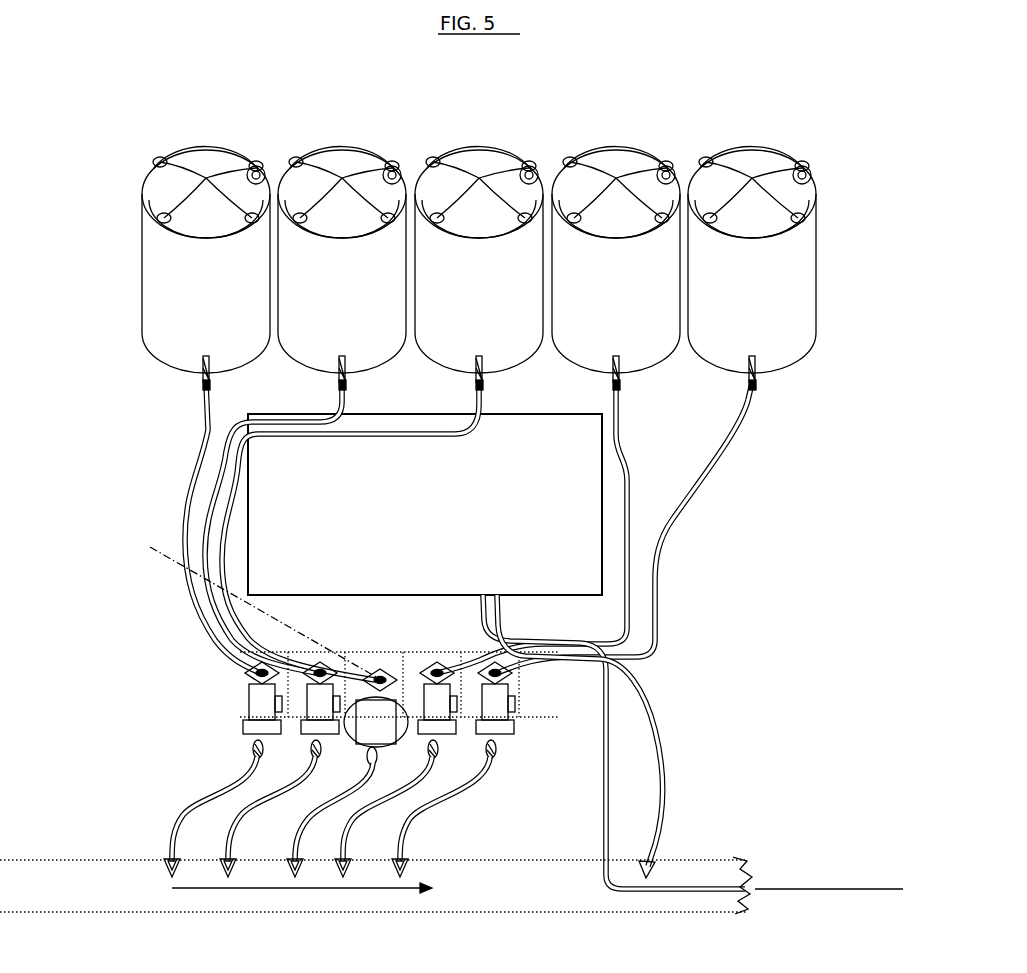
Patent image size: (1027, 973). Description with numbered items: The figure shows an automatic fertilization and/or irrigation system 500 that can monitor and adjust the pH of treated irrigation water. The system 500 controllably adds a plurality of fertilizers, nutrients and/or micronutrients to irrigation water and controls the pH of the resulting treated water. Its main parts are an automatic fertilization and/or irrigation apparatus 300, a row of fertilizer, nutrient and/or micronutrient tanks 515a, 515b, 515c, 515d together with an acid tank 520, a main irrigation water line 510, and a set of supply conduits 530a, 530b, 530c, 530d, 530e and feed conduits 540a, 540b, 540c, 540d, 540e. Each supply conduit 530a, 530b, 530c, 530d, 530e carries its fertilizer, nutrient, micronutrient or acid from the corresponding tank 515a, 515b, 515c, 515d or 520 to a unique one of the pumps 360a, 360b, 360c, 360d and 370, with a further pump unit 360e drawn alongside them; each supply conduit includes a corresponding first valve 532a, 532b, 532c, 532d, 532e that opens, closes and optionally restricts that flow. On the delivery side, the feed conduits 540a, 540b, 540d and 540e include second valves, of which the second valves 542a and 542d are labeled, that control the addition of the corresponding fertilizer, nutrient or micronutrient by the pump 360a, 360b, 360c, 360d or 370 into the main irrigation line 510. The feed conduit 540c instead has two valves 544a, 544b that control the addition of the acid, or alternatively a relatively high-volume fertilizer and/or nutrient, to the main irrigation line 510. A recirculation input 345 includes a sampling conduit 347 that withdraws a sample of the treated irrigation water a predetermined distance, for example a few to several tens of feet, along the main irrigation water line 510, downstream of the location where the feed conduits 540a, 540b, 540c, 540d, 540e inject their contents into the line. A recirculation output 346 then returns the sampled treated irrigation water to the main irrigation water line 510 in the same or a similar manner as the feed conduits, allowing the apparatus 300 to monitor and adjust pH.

The automatic fertilization and/or irrigation system 500 is at (89, 82).
The fertilizer, nutrient and/or micronutrient tank 515a is at (207, 176).
The fertilizer, nutrient and/or micronutrient tank 515b is at (343, 176).
The fertilizer, nutrient and/or micronutrient tank 515c is at (617, 176).
The fertilizer, nutrient and/or micronutrient tank 515d is at (753, 176).
The acid tank 520 is at (480, 176).
The automatic fertilization and/or irrigation apparatus 300 is at (440, 518).
The fertilizer, nutrient and/or micronutrient supply conduit 530a is at (205, 447).
The fertilizer, nutrient and/or micronutrient supply conduit 530b is at (212, 497).
The fertilizer, nutrient and/or micronutrient supply conduit 530c is at (478, 402).
The fertilizer, nutrient and/or micronutrient supply conduit 530d is at (613, 447).
The fertilizer, nutrient and/or micronutrient supply conduit 530e is at (700, 466).
The first valve 532a is at (207, 381).
The first valve 532b is at (343, 381).
The first valve 532c is at (483, 382).
The first valve 532d is at (619, 382).
The first valve 532e is at (755, 382).
The pump 370 is at (240, 607).
The pump 360a is at (236, 668).
The pump 360b is at (297, 660).
The pump 360c is at (458, 737).
The pump 360d is at (516, 738).
The valve 360e is at (495, 710).
The valve 544a is at (360, 735).
The valve 544b is at (414, 662).
The second valve 542a is at (250, 748).
The second valve 542d is at (493, 753).
The fertilizer, nutrient and/or micronutrient feed conduit 540a is at (215, 808).
The fertilizer, nutrient and/or micronutrient feed conduit 540b is at (267, 817).
The fertilizer, nutrient and/or micronutrient feed conduit 540c is at (330, 820).
The fertilizer, nutrient and/or micronutrient feed conduit 540d is at (383, 817).
The fertilizer, nutrient and/or micronutrient feed conduit 540e is at (460, 800).
The recirculation input 345 is at (617, 723).
The recirculation output 346 is at (667, 794).
The sampling conduit 347 is at (862, 888).
The main irrigation water line 510 is at (102, 882).